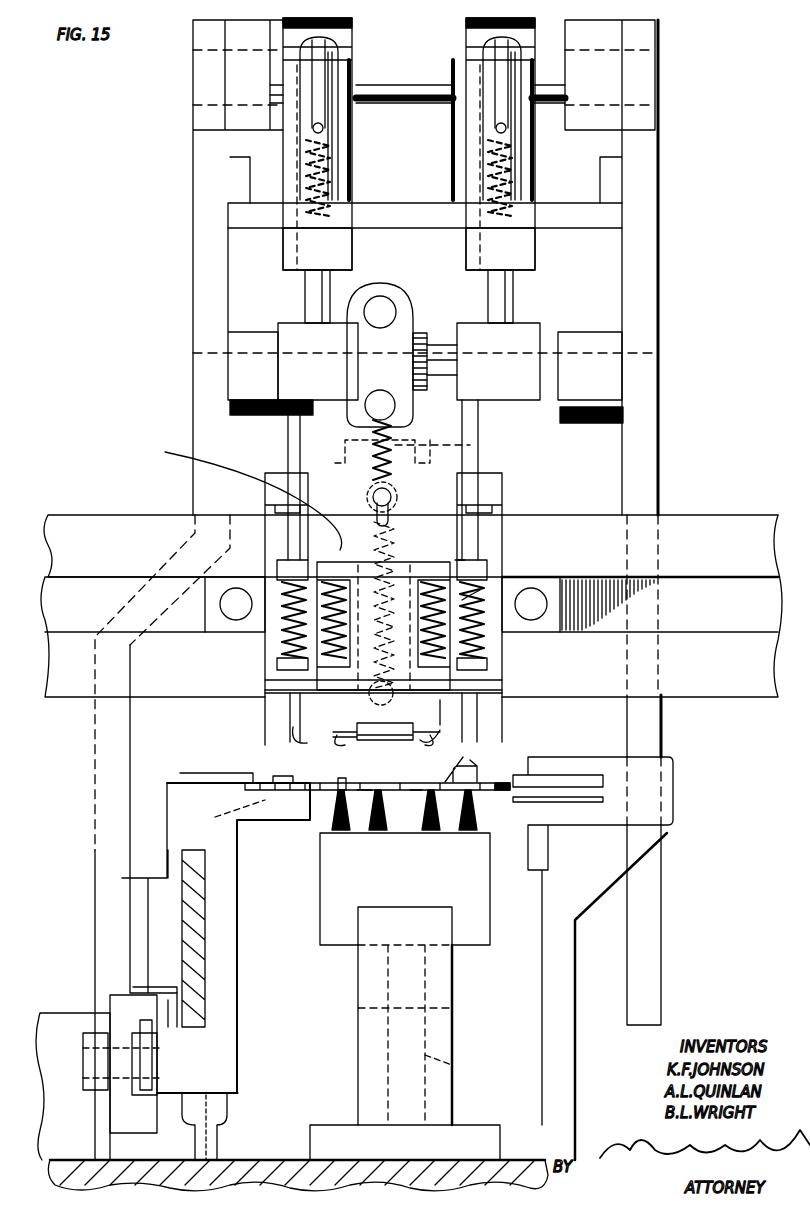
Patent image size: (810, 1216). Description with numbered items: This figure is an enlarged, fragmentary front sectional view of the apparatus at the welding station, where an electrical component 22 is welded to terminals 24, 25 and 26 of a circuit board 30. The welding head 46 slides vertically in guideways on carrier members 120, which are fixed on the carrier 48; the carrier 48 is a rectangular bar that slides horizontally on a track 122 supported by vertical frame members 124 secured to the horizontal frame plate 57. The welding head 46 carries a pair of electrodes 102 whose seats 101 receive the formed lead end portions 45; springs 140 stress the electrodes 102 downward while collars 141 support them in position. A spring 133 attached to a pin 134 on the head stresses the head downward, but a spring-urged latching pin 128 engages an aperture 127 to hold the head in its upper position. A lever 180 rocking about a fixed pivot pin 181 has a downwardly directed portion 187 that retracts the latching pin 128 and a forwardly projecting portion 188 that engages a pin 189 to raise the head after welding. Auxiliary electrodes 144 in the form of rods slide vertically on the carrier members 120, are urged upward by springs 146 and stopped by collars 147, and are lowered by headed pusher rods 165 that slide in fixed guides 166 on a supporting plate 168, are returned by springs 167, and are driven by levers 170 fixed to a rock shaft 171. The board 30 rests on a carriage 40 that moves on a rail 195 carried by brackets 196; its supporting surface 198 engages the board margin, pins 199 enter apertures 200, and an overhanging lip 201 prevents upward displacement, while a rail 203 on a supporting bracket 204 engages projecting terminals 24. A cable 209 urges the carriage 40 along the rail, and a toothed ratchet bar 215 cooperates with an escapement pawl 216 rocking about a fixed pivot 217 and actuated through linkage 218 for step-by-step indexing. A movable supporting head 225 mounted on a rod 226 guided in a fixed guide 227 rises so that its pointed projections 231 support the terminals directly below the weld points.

The electrical component 22 is at (385, 730).
The terminal 24 is at (480, 772).
The terminal 25 is at (346, 782).
The terminal 26 is at (330, 790).
The circuit board 30 is at (480, 792).
The carriage 40 is at (153, 800).
The lead end portion 45 is at (300, 738).
The welding head 46 is at (195, 465).
The carrier 48 is at (70, 590).
The horizontal frame plate 57 is at (300, 1150).
The seat 101 is at (445, 720).
The electrode 102 is at (495, 692).
The carrier member 120 is at (490, 495).
The track 122 is at (740, 525).
The vertical frame member 124 is at (200, 310).
The aperture 127 is at (378, 515).
The latching pin 128 is at (375, 497).
The spring 133 is at (398, 448).
The pin 134 is at (400, 398).
The spring 140 is at (440, 625).
The collar 141 is at (460, 680).
The auxiliary electrode 144 is at (290, 445).
The spring 146 is at (480, 600).
The collar 147 is at (490, 568).
The pusher rod 165 is at (315, 300).
The guide 166 is at (283, 262).
The spring 167 is at (470, 160).
The supporting plate 168 is at (408, 222).
The lever 170 is at (345, 40).
The rock shaft 171 is at (400, 95).
The lever 180 is at (428, 340).
The pivot pin 181 is at (552, 360).
The downwardly directed portion 187 is at (470, 445).
The forwardly projecting portion 188 is at (440, 370).
The pin 189 is at (396, 312).
The rail 195 is at (210, 937).
The bracket 196 is at (88, 960).
The supporting surface 198 is at (262, 788).
The pin 199 is at (285, 778).
The aperture 200 is at (225, 813).
The overhanging lip 201 is at (250, 775).
The rail 203 is at (548, 818).
The supporting bracket 204 is at (545, 1020).
The cable 209 is at (210, 1142).
The toothed ratchet bar 215 is at (145, 1045).
The escapement pawl 216 is at (175, 1110).
The pivot 217 is at (123, 880).
The linkage 218 is at (95, 1110).
The supporting head 225 is at (352, 888).
The rod 226 is at (455, 1065).
The guide 227 is at (440, 1090).
The pointed projection 231 is at (420, 835).